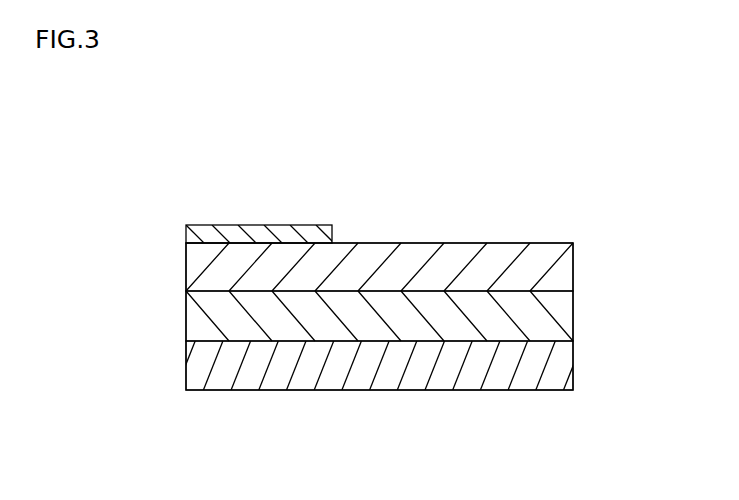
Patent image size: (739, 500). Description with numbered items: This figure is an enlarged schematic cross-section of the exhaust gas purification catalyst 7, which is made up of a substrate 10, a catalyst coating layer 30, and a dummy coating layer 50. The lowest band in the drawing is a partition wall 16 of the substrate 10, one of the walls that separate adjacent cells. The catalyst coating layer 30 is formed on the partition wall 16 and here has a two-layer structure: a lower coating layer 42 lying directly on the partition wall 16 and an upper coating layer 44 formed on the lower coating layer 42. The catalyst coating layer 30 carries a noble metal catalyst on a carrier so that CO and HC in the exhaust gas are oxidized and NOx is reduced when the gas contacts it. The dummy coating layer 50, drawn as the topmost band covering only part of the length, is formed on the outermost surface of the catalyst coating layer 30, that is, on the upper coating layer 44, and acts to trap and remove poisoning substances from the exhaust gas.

The exhaust gas purification catalyst 7 is at (422, 202).
The substrate 10 is at (353, 392).
The partition walls 16 is at (487, 390).
The catalyst coating layer 30 is at (657, 238).
The lower coating layer 42 is at (573, 315).
The upper coating layer 44 is at (573, 262).
The dummy coating layer 50 is at (261, 226).